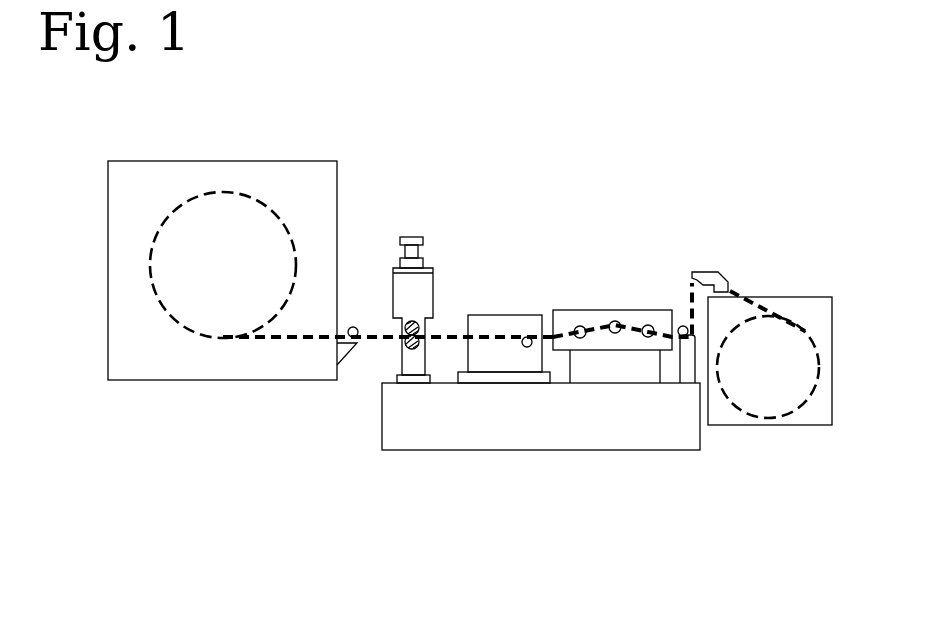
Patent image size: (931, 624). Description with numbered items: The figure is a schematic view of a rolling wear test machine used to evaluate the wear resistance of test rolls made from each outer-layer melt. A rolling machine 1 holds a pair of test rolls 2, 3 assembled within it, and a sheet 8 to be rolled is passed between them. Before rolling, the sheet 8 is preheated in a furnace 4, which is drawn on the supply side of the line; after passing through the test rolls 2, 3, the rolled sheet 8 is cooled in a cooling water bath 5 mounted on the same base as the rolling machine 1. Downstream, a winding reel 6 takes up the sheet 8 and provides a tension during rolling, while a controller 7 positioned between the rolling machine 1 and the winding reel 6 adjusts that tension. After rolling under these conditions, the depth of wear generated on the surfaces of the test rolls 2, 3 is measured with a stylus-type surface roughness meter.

The rolling machine 1 is at (393, 284).
The test roll 2 is at (412, 323).
The test roll 3 is at (421, 350).
The furnace 4 is at (307, 208).
The cooling water bath 5 is at (502, 353).
The winding reel 6 is at (790, 312).
The controller 7 is at (612, 322).
The sheet 8 is at (275, 339).